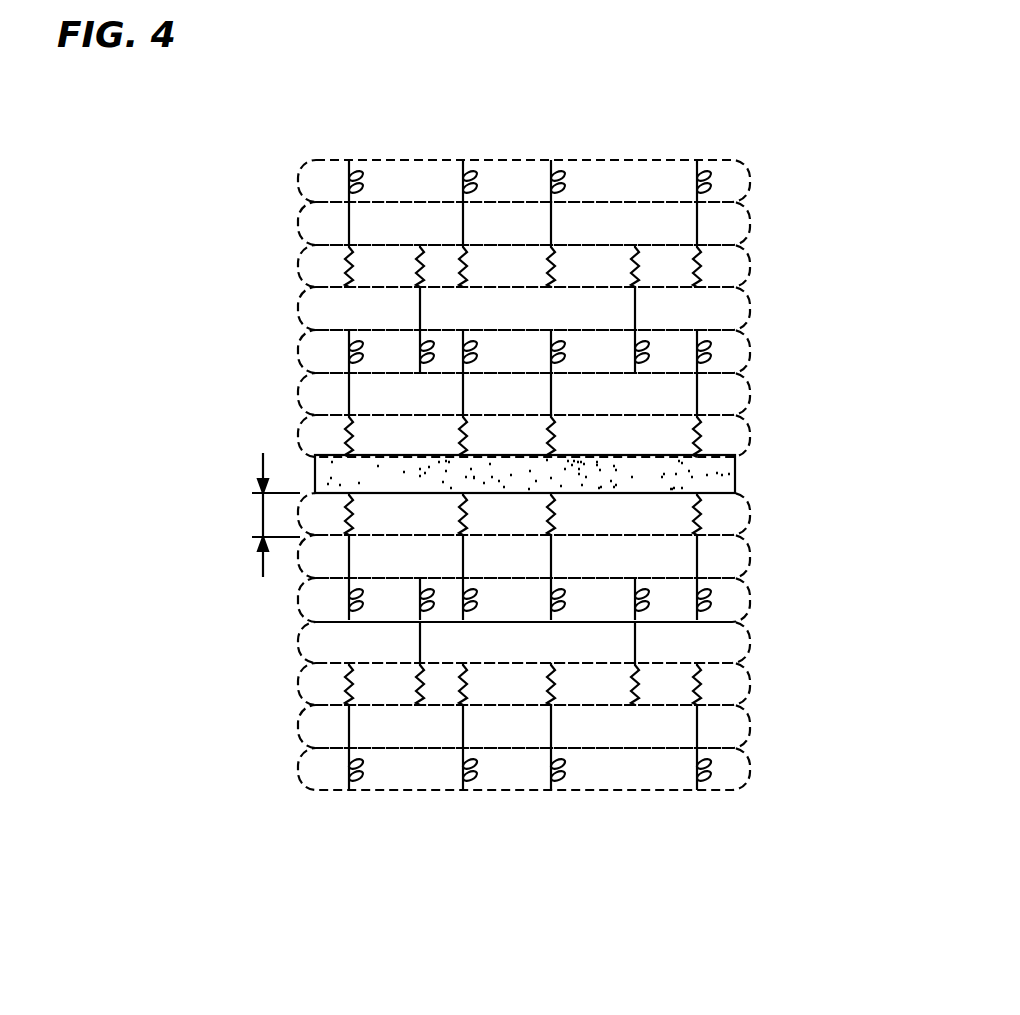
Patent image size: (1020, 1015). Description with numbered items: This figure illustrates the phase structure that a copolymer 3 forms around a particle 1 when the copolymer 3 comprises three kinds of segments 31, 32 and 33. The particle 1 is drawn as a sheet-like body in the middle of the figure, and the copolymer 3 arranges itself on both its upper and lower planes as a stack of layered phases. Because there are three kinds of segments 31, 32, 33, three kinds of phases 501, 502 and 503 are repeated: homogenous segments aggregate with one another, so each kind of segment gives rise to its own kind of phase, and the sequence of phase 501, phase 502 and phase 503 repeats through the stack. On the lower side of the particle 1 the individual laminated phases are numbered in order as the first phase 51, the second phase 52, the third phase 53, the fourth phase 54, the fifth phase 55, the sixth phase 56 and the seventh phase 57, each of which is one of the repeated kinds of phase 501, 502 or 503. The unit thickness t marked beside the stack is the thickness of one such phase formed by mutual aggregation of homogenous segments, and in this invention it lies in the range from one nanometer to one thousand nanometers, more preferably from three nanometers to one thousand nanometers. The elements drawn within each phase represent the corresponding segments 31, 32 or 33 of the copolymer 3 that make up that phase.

The particle 1 is at (722, 471).
The copolymer 3 is at (346, 660).
The segment 31 is at (350, 441).
The segment 32 is at (350, 399).
The segment 33 is at (350, 356).
The first phase 51 is at (752, 512).
The second phase 52 is at (752, 555).
The third phase 53 is at (752, 598).
The fourth phase 54 is at (752, 640).
The fifth phase 55 is at (750, 683).
The sixth layer (wiring layer) 56 is at (750, 725).
The seventh layer (coil layer) 57 is at (750, 768).
The phase 501 is at (330, 515).
The phase 502 is at (320, 603).
The phase 503 is at (320, 638).
The unit thickness t is at (260, 517).